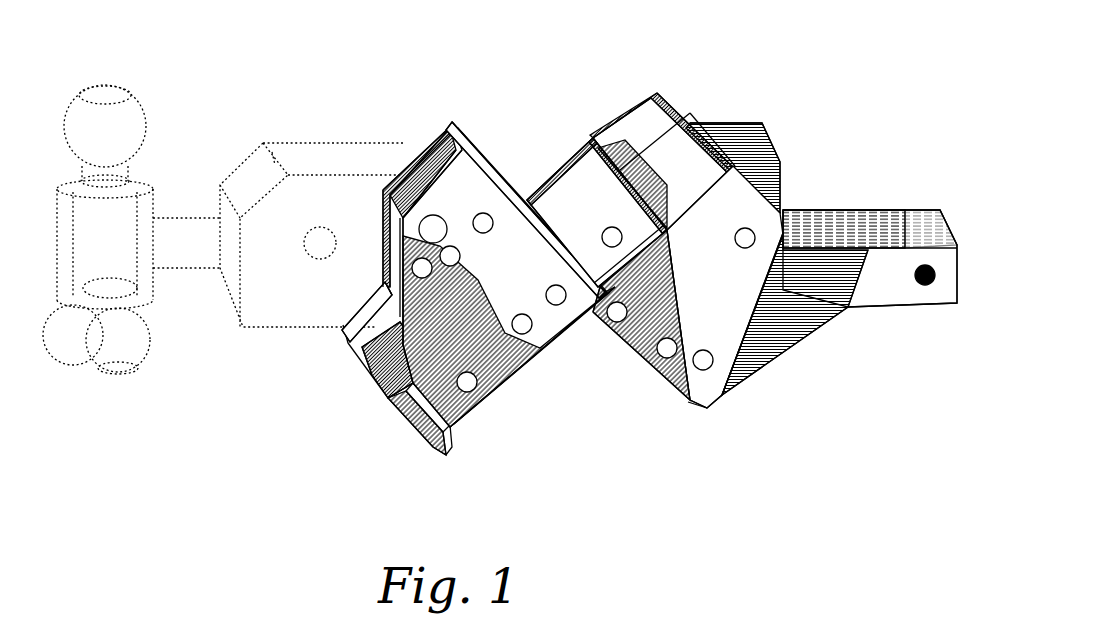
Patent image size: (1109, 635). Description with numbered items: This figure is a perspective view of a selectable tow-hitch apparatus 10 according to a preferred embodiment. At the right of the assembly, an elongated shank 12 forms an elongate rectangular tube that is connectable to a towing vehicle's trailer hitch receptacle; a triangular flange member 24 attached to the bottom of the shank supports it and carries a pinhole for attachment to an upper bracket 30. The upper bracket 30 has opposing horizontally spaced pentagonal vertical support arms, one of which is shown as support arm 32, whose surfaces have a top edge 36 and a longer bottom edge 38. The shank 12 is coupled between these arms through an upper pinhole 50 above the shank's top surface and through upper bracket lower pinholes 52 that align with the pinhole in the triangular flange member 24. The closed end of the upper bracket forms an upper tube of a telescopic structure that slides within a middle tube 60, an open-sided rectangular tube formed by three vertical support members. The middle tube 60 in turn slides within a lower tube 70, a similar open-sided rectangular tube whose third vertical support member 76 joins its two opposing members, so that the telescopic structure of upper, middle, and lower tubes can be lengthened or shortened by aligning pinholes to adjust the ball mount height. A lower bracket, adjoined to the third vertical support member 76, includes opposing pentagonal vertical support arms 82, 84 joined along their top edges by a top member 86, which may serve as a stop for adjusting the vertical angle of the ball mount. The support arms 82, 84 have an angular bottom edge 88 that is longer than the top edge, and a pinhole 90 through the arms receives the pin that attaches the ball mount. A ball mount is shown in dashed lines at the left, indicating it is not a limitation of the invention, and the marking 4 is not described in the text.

The hitch assembly 4 is at (670, 150).
The selectable tow-hitch apparatus 10 is at (372, 440).
The elongated shank 12 is at (895, 233).
The triangular flange member 24 is at (777, 330).
The upper bracket 30 is at (733, 372).
The pentagonal vertical support arm 32 is at (648, 320).
The top edge 36 is at (767, 183).
The bottom edge 38 is at (690, 368).
The upper pinhole 50 is at (757, 232).
The upper bracket lower pinhole 52 is at (700, 368).
The middle tube 60 is at (653, 153).
The lower tube 70 is at (492, 298).
The third vertical support member 76 is at (655, 103).
The pentagonal vertical support arm 82 is at (411, 244).
The pentagonal vertical support arm 84 is at (433, 143).
The top member 86 is at (500, 177).
The bottom edge 88 is at (393, 300).
The pinhole 90 is at (432, 232).